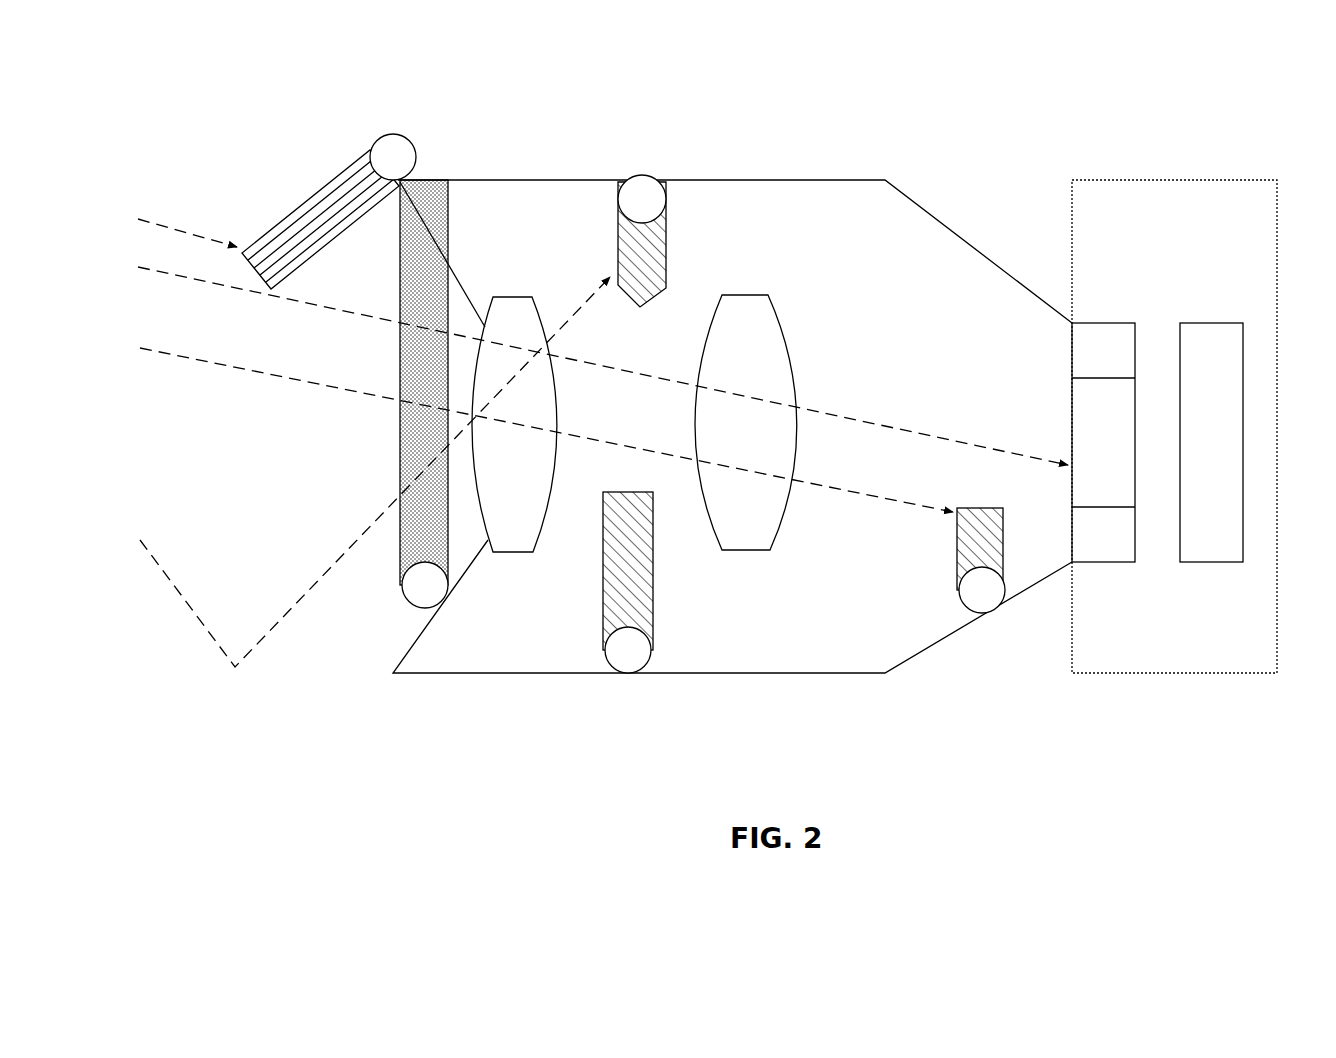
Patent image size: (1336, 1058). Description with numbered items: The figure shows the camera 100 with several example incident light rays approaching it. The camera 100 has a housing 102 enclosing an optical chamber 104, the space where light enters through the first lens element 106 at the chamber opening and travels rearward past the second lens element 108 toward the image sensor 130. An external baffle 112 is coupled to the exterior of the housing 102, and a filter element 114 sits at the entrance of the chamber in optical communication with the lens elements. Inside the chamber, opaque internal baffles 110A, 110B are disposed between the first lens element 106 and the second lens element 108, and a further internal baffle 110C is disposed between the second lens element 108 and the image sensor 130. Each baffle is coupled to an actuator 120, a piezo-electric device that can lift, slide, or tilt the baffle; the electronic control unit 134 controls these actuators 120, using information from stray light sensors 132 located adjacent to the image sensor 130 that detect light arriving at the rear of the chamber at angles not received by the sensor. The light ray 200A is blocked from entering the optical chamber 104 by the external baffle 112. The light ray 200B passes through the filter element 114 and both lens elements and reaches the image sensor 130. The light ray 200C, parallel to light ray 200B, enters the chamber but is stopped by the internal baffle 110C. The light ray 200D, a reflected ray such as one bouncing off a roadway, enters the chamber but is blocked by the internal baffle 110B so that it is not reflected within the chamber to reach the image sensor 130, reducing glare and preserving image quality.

The camera 100 is at (1016, 78).
The housing 102 is at (740, 178).
The optical chamber 104 is at (873, 232).
The first lens element 106 is at (495, 297).
The second lens element 108 is at (752, 293).
The internal baffle 110A is at (653, 582).
The internal baffle 110B is at (690, 234).
The internal baffle 110C is at (957, 547).
The external baffle 112 is at (327, 184).
The filter element 114 is at (398, 267).
The actuator 120 is at (403, 147).
The image sensor 130 is at (1135, 430).
The stray light sensor 132 is at (1092, 323).
The electronic control unit 134 is at (1207, 323).
The light ray 200A is at (158, 225).
The light ray 200B is at (207, 287).
The light ray 200C is at (272, 375).
The light ray 200D is at (190, 604).